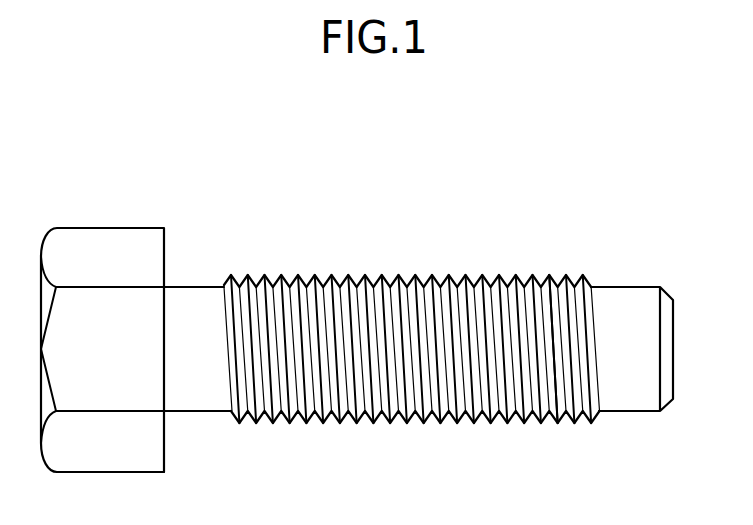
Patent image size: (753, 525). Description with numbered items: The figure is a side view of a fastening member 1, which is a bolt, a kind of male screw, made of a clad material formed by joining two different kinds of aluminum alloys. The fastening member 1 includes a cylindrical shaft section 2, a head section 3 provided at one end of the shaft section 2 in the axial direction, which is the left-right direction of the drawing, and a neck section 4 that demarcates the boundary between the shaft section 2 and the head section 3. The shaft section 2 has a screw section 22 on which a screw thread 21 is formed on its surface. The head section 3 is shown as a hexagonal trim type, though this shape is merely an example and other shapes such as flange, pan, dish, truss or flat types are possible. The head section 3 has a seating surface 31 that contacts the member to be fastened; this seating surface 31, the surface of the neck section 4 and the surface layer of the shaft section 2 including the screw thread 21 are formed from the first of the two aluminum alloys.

The fastening member 1 is at (357, 299).
The shaft section 2 is at (431, 343).
The screw thread 21 is at (551, 275).
The screw section 22 is at (590, 428).
The head section 3 is at (77, 246).
The seating surface 31 is at (164, 458).
The neck section 4 is at (164, 287).